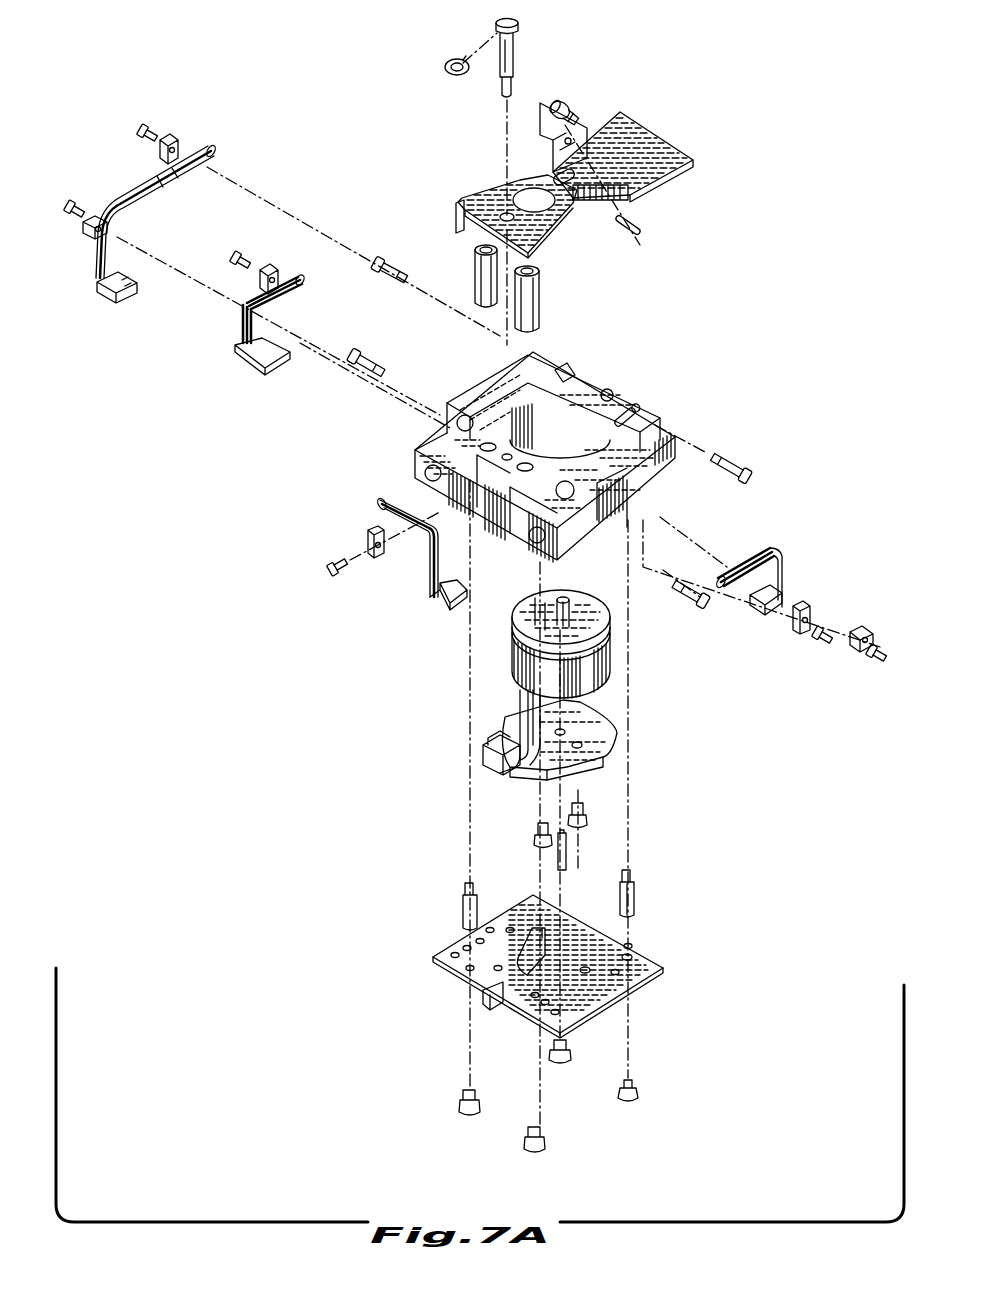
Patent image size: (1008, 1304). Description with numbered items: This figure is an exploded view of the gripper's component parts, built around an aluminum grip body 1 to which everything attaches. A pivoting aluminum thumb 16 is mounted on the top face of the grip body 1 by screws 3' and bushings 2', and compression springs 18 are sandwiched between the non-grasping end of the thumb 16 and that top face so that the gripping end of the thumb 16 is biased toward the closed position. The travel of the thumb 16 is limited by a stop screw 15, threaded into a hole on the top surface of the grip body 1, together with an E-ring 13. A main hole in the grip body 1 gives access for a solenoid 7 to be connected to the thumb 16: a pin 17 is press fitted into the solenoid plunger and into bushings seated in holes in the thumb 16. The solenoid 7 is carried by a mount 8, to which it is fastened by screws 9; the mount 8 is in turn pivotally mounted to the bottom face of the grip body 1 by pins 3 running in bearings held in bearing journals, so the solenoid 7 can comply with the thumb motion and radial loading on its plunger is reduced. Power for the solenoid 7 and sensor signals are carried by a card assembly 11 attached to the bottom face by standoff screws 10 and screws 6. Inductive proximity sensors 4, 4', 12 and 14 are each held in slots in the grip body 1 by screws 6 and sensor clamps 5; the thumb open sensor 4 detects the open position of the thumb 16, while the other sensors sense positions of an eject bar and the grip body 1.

The grip body 1 is at (553, 362).
The bushings 2' is at (628, 393).
The pins 3 is at (513, 486).
The screws 3' is at (563, 353).
The inductive proximity sensor (thumb open sensor) 4 is at (421, 553).
The inductive proximity sensor 4' is at (256, 333).
The sensor clamps 5 is at (162, 152).
The screws 6 is at (140, 127).
The solenoid 7 is at (610, 650).
The mount 8 is at (608, 735).
The screws 9 is at (582, 825).
The standoff screws 10 is at (635, 900).
The card assembly 11 is at (643, 975).
The inductive proximity sensor 12 is at (205, 146).
The E-ring 13 is at (446, 70).
The inductive proximity sensor 14 is at (764, 548).
The stop screw 15 is at (497, 36).
The thumb 16 is at (655, 143).
The pin 17 is at (640, 230).
The compression springs 18 is at (540, 305).